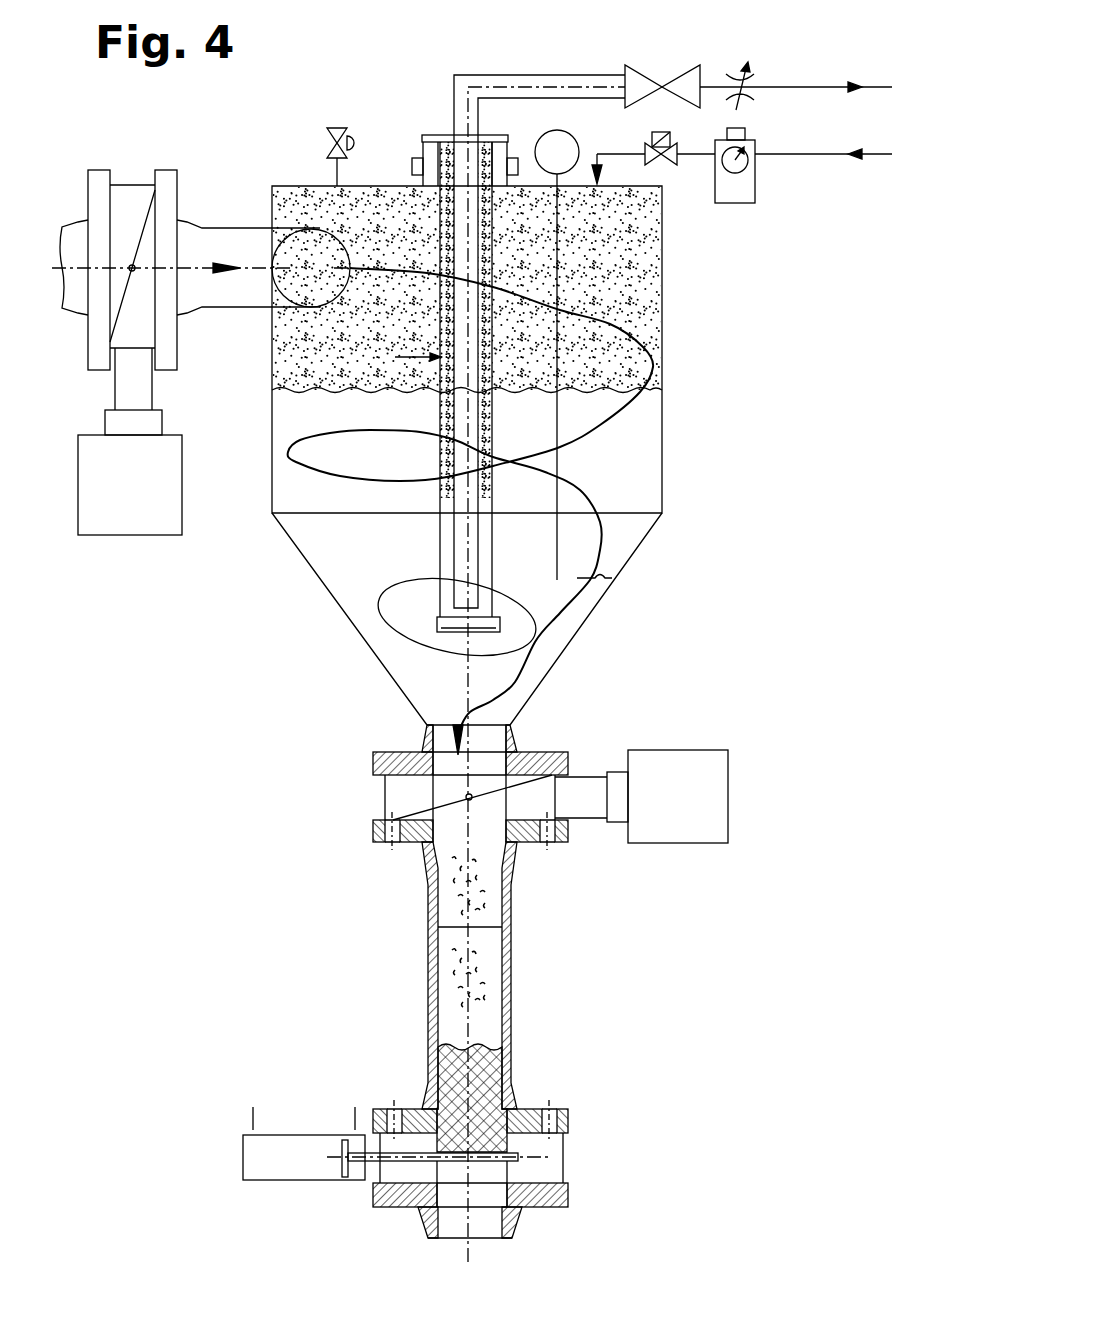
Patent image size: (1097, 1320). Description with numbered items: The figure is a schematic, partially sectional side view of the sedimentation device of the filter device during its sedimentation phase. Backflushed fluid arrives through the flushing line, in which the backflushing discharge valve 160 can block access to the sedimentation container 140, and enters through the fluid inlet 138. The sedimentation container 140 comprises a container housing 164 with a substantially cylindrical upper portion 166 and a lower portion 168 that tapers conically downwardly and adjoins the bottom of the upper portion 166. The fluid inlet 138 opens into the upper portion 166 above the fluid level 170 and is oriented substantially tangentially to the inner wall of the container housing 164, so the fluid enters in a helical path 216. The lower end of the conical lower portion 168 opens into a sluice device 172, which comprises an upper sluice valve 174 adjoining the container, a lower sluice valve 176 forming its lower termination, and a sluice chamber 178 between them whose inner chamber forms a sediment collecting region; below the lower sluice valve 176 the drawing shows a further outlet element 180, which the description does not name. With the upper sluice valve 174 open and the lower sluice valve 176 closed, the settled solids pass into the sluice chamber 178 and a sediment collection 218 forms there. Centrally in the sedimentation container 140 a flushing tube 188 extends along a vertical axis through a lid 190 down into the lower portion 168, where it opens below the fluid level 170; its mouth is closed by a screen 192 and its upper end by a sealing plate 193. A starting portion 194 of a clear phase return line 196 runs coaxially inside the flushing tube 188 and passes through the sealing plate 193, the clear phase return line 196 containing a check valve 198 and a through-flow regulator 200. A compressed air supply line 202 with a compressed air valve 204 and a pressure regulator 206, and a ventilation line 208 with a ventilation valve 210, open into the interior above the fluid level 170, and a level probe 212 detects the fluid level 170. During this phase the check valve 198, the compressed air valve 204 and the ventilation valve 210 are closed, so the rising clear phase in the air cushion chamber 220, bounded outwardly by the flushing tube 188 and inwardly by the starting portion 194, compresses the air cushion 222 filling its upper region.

The fluid inlet 138 is at (332, 284).
The sedimentation container 140 is at (672, 322).
The backflushing discharge valve 160 is at (125, 505).
The container housing 164 is at (663, 345).
The upper portion 166 is at (663, 457).
The lower portion 168 is at (557, 645).
The fluid level 170 is at (663, 390).
The sluice device 172 is at (528, 944).
The upper sluice valve 174 is at (730, 795).
The lower sluice valve 176 is at (548, 1172).
The sluice chamber 178 is at (495, 995).
The discharge nozzle 180 is at (520, 1228).
The flushing tube 188 is at (487, 367).
The lid 190 is at (388, 185).
The screen 192 is at (440, 630).
The sealing plate 193 is at (430, 133).
The starting portion 194 is at (473, 423).
The clear phase return line 196 is at (453, 222).
The check valve 198 is at (662, 86).
The through-flow regulator 200 is at (740, 86).
The compressed air supply line 202 is at (825, 155).
The compressed air valve 204 is at (655, 163).
The pressure regulator 206 is at (740, 204).
The ventilation line 208 is at (333, 173).
The ventilation valve 210 is at (337, 126).
The level probe 212 is at (550, 175).
The helical path 216 is at (613, 317).
The sediment collection 218 is at (495, 1070).
The air cushion chamber 220 is at (398, 359).
The air cushion 222 is at (440, 307).